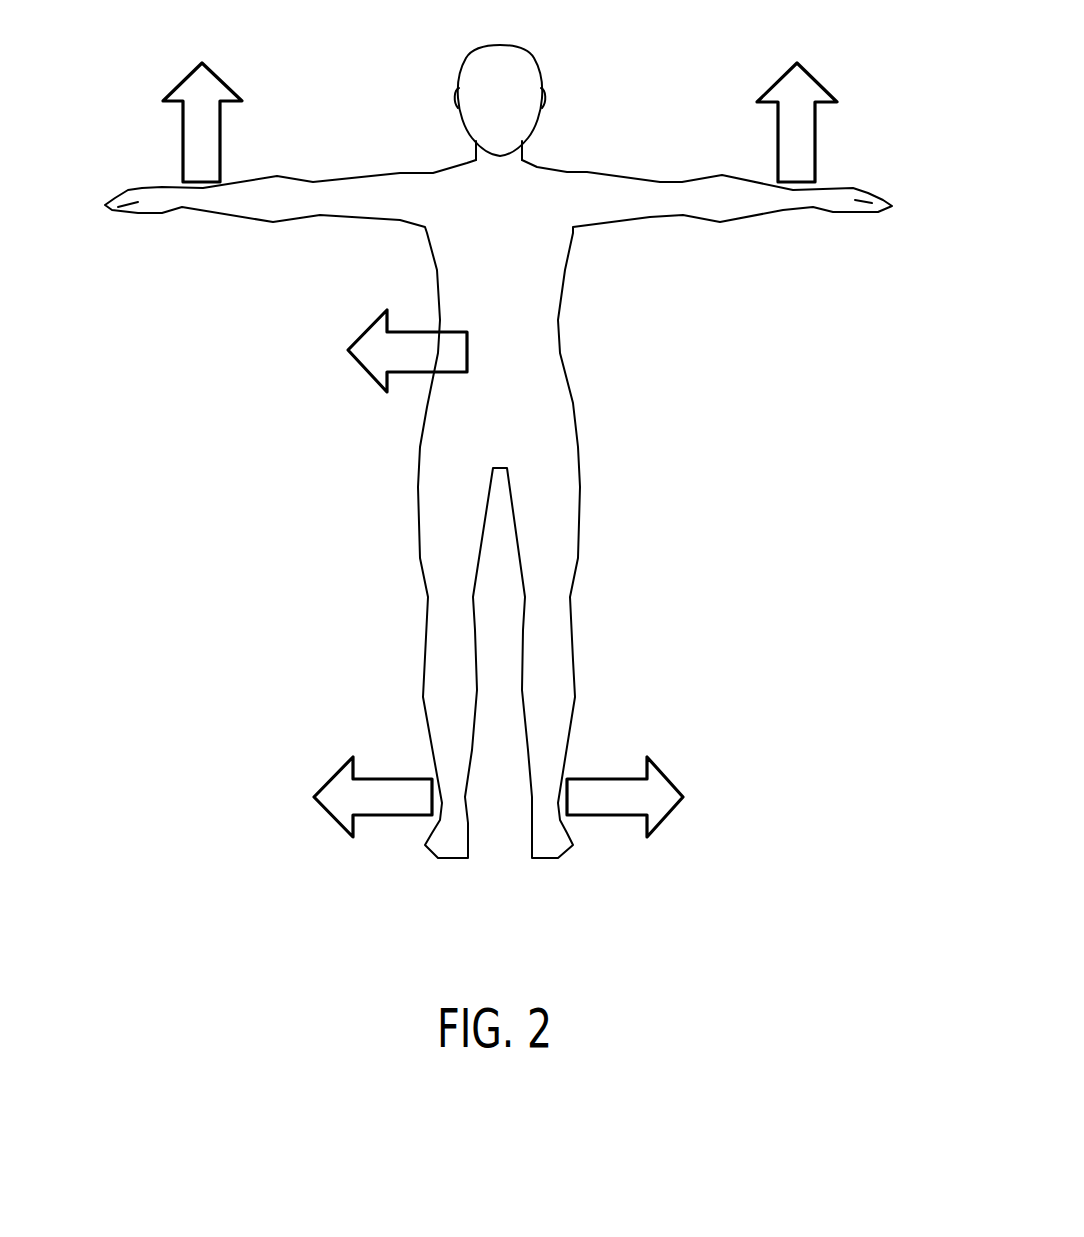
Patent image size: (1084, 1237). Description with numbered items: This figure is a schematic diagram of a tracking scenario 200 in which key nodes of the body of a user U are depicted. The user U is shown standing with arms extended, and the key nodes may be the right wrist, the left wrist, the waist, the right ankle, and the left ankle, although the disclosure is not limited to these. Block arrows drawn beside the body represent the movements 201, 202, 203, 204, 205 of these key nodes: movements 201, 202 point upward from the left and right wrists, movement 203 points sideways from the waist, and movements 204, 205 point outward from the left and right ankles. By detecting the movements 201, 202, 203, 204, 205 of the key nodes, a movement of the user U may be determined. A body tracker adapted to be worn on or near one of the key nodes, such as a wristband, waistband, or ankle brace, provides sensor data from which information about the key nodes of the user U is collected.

The tracking scenario 200 is at (498, 485).
The user U is at (527, 52).
The movement 201 is at (225, 82).
The movement 202 is at (773, 82).
The movement 203 is at (368, 332).
The movement 204 is at (340, 773).
The movement 205 is at (665, 773).